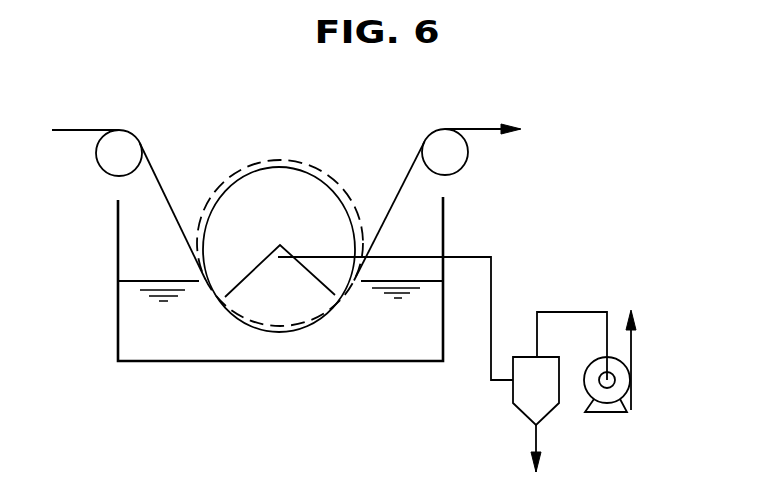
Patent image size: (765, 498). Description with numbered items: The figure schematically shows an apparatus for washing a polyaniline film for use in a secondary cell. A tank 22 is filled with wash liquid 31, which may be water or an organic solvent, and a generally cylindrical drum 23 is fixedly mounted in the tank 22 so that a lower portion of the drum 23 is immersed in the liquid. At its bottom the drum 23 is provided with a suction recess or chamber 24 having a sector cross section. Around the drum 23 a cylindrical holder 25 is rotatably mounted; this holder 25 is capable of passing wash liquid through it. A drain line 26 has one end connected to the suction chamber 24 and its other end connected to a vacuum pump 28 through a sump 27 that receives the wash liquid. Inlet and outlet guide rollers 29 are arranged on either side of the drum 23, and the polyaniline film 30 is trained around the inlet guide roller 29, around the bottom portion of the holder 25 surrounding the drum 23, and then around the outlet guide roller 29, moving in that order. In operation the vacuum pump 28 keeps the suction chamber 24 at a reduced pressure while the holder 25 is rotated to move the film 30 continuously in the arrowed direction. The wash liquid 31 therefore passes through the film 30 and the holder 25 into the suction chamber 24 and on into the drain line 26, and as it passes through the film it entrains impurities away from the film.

The tank 22 is at (118, 250).
The drum 23 is at (323, 177).
The suction chamber 24 is at (288, 310).
The cylindrical holder 25 is at (277, 160).
The drain line 26 is at (480, 256).
The sump 27 is at (513, 396).
The vacuum pump 28 is at (627, 396).
The guide rollers 29 is at (125, 145).
The polyaniline film 30 is at (168, 200).
The wash liquid 31 is at (195, 348).